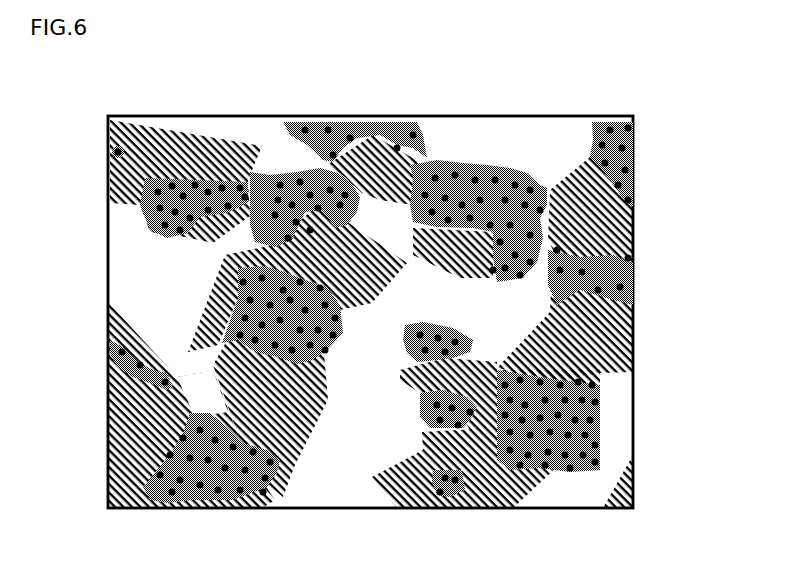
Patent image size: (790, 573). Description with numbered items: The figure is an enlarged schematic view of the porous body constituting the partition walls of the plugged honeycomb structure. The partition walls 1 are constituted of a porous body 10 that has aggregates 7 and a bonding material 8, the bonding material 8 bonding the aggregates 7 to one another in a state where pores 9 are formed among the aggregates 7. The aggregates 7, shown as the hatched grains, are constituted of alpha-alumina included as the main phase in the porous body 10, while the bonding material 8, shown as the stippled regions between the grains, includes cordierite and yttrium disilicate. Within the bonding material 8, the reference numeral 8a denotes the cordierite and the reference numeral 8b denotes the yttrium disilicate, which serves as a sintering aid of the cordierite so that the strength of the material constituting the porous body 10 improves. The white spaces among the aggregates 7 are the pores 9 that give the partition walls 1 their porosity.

The partition walls 1 is at (515, 106).
The porous body 10 is at (370, 312).
The aggregates 7 is at (612, 238).
The bonding material 8 is at (602, 431).
The cordierite 8a is at (597, 410).
The Y2Si2O7 8b is at (598, 443).
The pores 9 is at (362, 424).